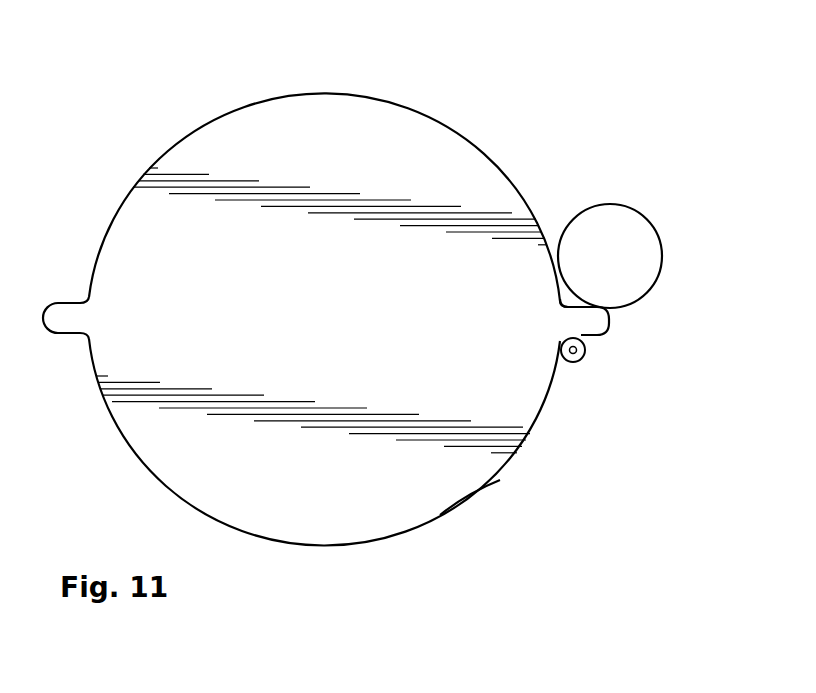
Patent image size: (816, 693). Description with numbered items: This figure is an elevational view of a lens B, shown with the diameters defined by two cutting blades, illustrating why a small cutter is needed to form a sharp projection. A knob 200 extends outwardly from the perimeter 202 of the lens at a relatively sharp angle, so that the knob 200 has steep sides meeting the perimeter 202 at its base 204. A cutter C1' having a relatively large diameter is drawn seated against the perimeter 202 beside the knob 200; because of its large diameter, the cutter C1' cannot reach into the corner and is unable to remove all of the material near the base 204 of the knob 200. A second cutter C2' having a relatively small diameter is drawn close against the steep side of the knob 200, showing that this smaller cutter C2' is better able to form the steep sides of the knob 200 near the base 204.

The bottle / container body B is at (481, 94).
The perimeter 202 is at (474, 503).
The knob 200 is at (611, 339).
The base 204 is at (561, 304).
The cutter C1' is at (634, 216).
The cutter C2' is at (595, 405).